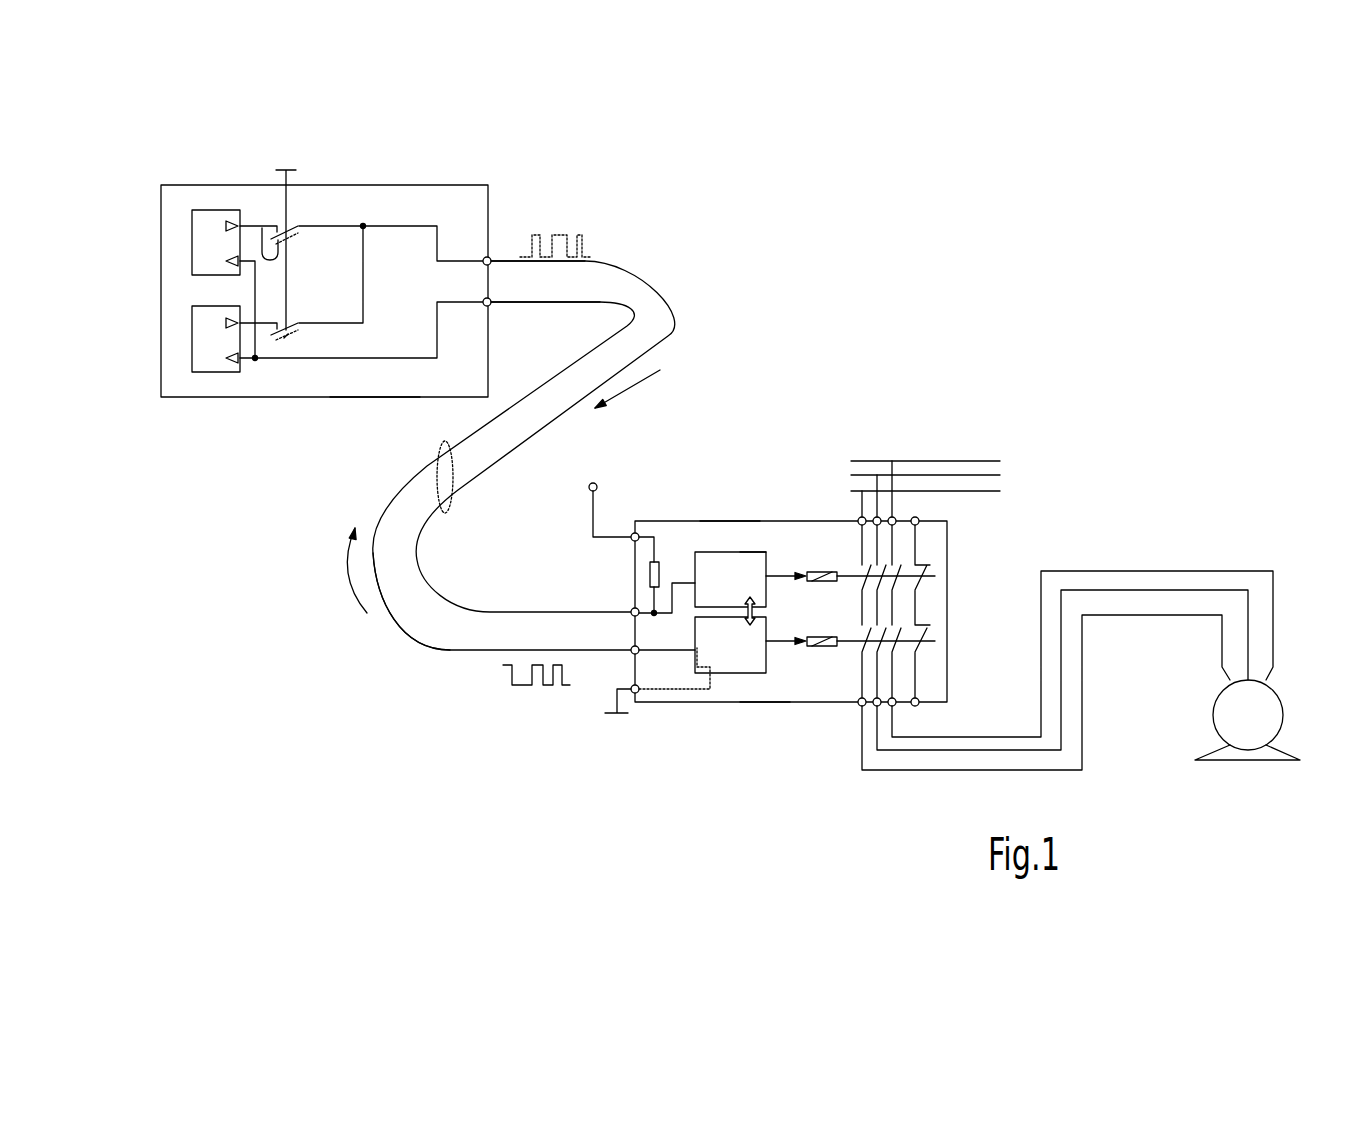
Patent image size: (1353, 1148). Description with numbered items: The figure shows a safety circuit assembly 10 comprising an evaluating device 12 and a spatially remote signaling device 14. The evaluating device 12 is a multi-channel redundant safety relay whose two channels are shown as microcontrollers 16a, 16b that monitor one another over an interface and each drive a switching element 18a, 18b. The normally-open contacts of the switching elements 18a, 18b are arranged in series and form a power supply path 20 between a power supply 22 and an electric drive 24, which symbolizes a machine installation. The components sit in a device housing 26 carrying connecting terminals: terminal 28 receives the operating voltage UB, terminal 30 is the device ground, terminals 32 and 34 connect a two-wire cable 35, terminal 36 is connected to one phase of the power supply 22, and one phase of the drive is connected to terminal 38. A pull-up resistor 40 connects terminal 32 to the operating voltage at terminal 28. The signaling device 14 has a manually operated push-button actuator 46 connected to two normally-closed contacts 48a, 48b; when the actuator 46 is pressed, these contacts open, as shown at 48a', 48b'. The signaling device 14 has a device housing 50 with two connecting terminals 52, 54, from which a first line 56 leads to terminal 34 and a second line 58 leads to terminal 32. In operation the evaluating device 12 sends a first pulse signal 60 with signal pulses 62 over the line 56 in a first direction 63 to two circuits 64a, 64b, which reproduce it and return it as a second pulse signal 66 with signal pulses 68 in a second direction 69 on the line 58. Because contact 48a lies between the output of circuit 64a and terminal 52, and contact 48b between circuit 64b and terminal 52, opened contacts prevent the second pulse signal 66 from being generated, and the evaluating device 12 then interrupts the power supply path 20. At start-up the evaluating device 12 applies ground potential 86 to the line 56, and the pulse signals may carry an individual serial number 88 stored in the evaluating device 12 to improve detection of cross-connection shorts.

The safety circuit assembly 10 is at (868, 280).
The evaluating device 12 is at (808, 705).
The signaling device 14 is at (413, 183).
The microcontroller 16a is at (722, 551).
The microcontroller 16b is at (740, 673).
The switching element 18a is at (816, 572).
The switching element 18b is at (818, 647).
The power supply path 20 is at (900, 557).
The power supply 22 is at (958, 460).
The electric drive 24 is at (1283, 712).
The device housing 26 is at (727, 521).
The connecting terminal 28 is at (632, 538).
The connecting terminal 30 is at (637, 695).
The connecting terminal 32 is at (632, 612).
The connecting terminal 34 is at (632, 652).
The two-wire cable 35 is at (437, 477).
The connecting terminal 36 is at (897, 518).
The connecting terminal 38 is at (893, 706).
The pull-up resistor 40 is at (661, 562).
The actuator 46 is at (287, 170).
The contact 48a is at (333, 190).
The opened contact 48a' is at (256, 190).
The contact 48b is at (312, 299).
The opened contact 48b' is at (286, 398).
The device housing 50 is at (360, 397).
The connecting terminal 52 is at (490, 258).
The connecting terminal 54 is at (491, 305).
The first line 56 is at (393, 616).
The second line 58 is at (683, 312).
The first pulse signal 60 is at (510, 700).
The signal pulses 62 is at (503, 668).
The first direction 63 is at (350, 570).
The circuit 64a is at (206, 212).
The circuit 64b is at (213, 373).
The second pulse signal 66 is at (605, 238).
The signal pulses 68 is at (580, 237).
The second direction 69 is at (636, 386).
The ground potential 86 is at (677, 690).
The serial number 88 is at (752, 552).